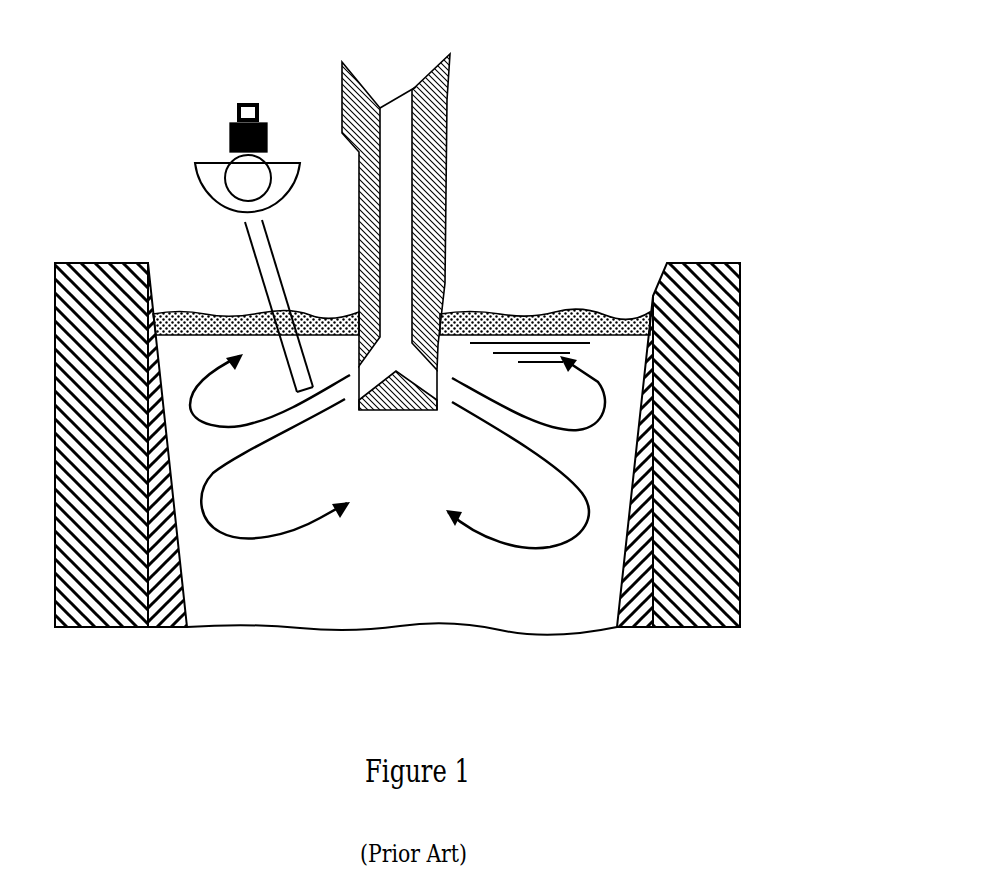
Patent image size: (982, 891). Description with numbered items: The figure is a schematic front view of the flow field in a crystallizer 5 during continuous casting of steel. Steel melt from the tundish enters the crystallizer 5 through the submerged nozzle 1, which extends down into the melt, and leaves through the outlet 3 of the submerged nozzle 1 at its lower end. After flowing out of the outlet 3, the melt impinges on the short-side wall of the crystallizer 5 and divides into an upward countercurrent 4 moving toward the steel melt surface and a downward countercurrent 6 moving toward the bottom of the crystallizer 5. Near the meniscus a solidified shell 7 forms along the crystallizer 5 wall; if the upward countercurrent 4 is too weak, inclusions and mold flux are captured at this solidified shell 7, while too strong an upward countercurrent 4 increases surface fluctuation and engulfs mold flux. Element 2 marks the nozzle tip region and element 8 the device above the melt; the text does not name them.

The submerged nozzle 1 is at (442, 218).
The nozzle tip deflector 2 is at (422, 360).
The outlet 3 is at (505, 320).
The upward countercurrent 4 is at (560, 392).
The crystallizer 5 is at (725, 416).
The downward countercurrent 6 is at (552, 510).
The solidified shell 7 is at (470, 449).
The sensor / measuring device 8 is at (213, 188).